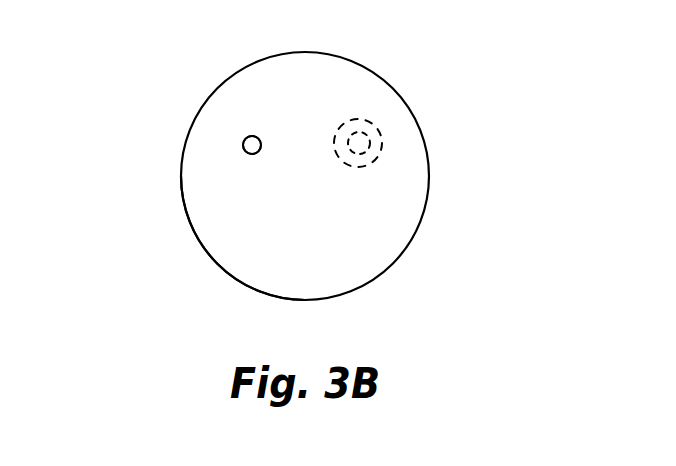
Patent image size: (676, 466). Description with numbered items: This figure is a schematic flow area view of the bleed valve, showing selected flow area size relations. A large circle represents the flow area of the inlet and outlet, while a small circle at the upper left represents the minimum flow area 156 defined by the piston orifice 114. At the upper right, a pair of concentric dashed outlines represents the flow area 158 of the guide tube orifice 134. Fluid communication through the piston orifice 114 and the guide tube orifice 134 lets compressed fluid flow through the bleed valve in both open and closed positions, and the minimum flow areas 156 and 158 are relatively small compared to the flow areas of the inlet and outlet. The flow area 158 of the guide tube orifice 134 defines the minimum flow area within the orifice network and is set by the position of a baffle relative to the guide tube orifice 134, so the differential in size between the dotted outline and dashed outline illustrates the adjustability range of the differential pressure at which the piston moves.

The piston orifice 114 is at (243, 147).
The minimum flow area of piston orifice 156 is at (252, 136).
The flow area of guide tube orifice 158 is at (366, 139).
The guide tube orifice 134 is at (369, 148).